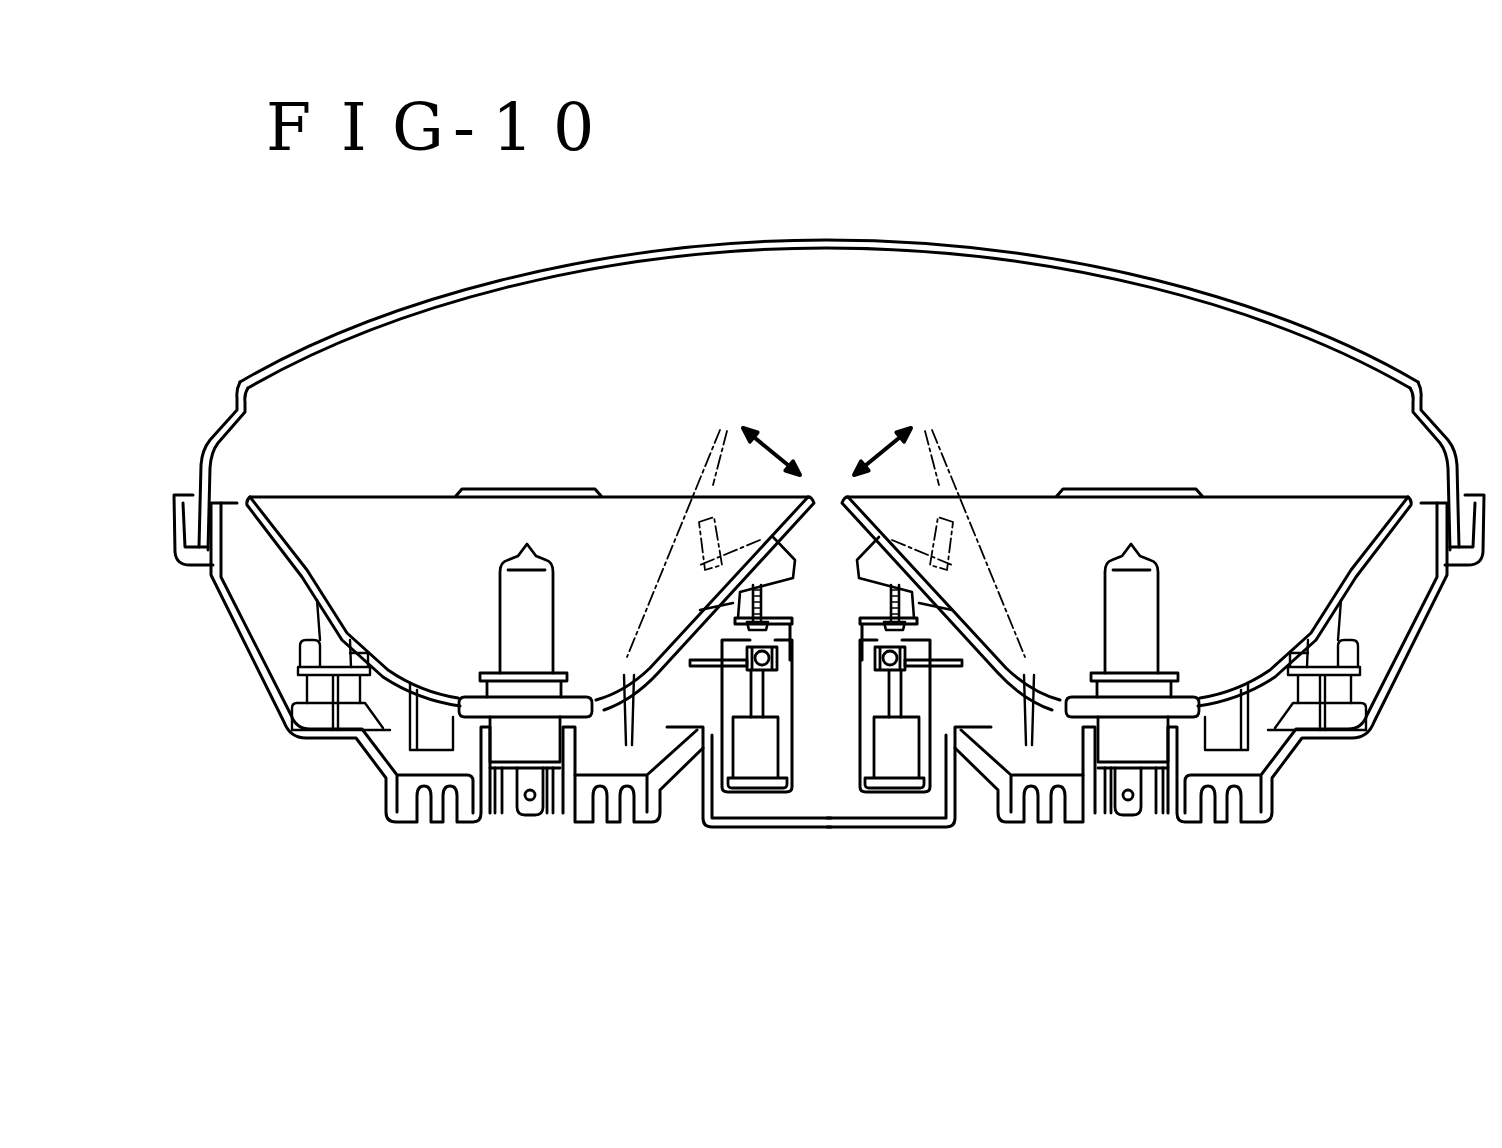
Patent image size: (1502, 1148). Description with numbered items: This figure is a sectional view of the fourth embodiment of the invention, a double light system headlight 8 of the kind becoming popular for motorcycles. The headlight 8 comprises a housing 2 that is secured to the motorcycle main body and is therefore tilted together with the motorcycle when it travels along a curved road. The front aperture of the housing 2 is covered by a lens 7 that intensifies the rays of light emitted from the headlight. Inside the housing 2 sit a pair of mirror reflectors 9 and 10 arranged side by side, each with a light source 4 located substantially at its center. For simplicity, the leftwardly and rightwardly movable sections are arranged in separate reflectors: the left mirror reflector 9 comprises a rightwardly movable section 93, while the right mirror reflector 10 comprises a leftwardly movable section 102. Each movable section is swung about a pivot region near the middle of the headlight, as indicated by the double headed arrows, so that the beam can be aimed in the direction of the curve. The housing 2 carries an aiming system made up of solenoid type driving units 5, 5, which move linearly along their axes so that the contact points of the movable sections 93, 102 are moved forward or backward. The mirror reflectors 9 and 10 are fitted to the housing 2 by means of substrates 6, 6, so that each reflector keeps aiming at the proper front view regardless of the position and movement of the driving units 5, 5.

The housing 2 is at (1378, 712).
The light source 4 is at (500, 625).
The solenoid type driving unit 5 is at (760, 742).
The substrate 6 is at (742, 783).
The lens 7 is at (810, 240).
The headlight 8 is at (1220, 280).
The left mirror reflector 9 is at (1360, 573).
The right mirror reflector 10 is at (307, 580).
The rightwardly movable section 93 is at (985, 650).
The leftwardly movable section 102 is at (677, 650).